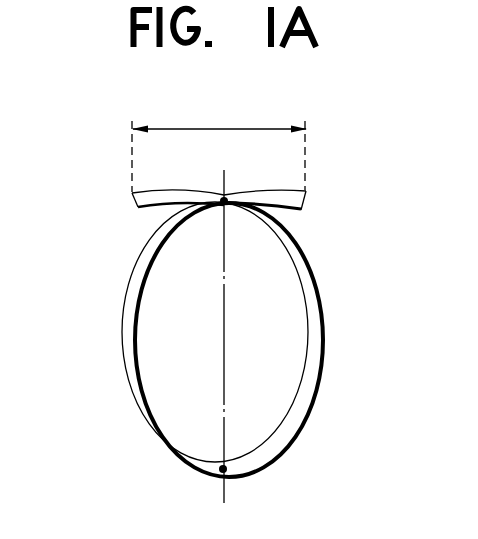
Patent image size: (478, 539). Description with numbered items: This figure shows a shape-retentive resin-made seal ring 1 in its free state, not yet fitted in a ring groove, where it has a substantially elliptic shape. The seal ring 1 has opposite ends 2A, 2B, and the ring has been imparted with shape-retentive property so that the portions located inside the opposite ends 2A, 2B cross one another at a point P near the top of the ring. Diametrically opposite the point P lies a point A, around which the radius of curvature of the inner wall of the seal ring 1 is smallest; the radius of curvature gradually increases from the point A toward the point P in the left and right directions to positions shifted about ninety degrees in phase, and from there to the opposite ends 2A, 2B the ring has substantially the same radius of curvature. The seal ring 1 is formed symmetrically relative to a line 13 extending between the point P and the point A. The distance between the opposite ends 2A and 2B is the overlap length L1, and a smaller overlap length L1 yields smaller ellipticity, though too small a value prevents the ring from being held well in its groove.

The resin-made seal ring 1 is at (322, 382).
The opposite end 2A is at (132, 198).
The opposite end 2B is at (304, 205).
The line 13 is at (225, 333).
The point P is at (231, 195).
The point A is at (227, 469).
The overlap length L1 is at (219, 143).